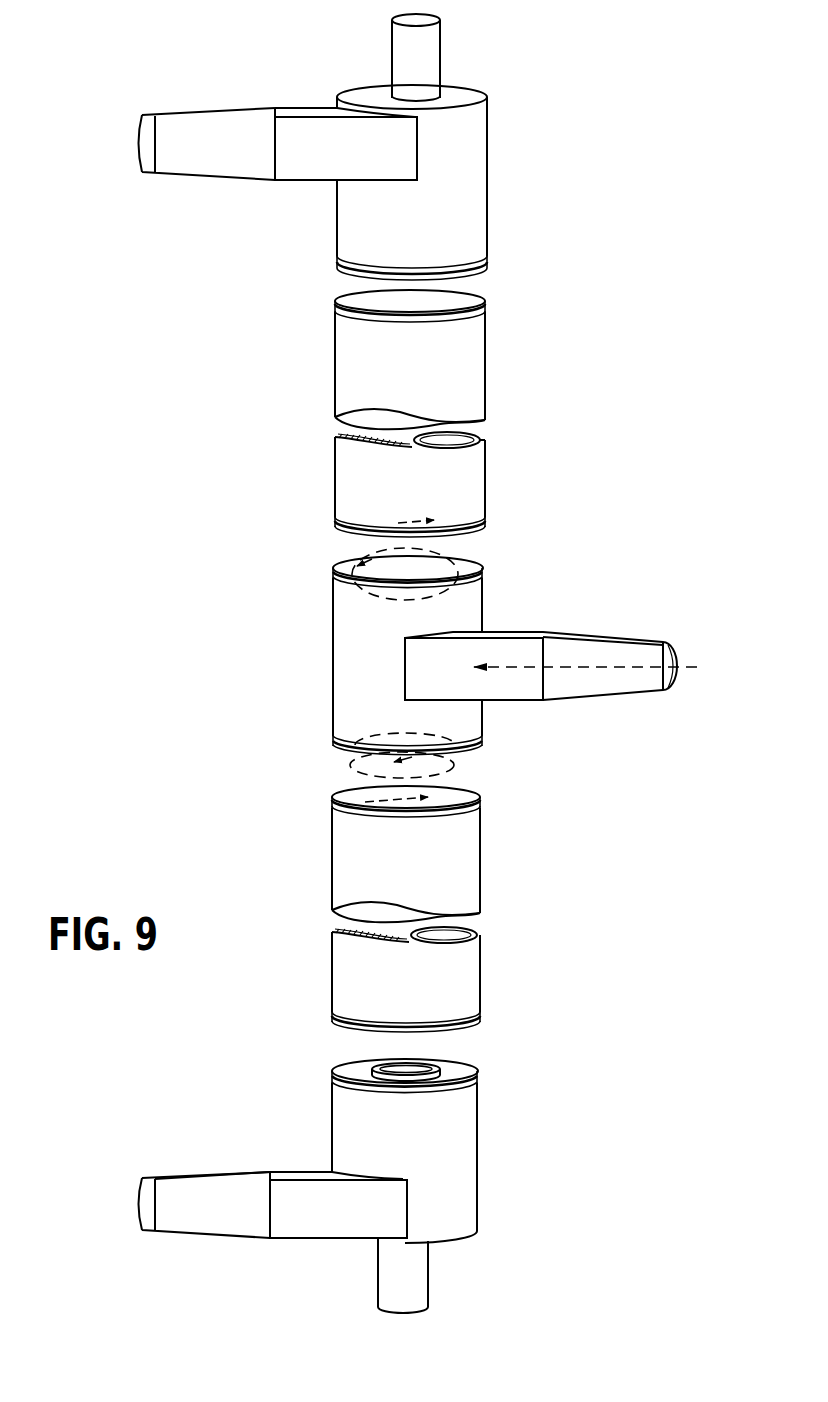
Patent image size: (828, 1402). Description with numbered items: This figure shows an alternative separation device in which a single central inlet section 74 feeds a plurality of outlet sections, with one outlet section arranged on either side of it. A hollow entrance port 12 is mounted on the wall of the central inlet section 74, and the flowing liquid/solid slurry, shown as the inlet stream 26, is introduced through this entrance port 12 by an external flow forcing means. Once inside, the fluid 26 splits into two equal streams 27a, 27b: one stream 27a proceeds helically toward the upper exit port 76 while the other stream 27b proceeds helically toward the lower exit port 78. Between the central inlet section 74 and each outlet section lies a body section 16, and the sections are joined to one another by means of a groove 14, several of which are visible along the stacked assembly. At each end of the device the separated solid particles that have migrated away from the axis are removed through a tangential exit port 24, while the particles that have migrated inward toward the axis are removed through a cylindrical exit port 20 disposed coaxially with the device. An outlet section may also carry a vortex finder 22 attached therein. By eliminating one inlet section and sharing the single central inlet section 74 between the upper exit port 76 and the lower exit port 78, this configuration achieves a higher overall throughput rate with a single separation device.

The entrance port 12 is at (607, 637).
The groove 14 is at (488, 258).
The body section 16 is at (506, 371).
The cylindrical exit port 20 is at (441, 45).
The vortex finder 22 is at (441, 1065).
The tangential exit port 24 is at (235, 1175).
The inlet stream 26 is at (607, 668).
The first fluid stream 27a is at (355, 562).
The second fluid stream 27b is at (356, 790).
The central inlet section 74 is at (318, 672).
The upper exit port 76 is at (512, 181).
The lower exit port 78 is at (497, 1163).